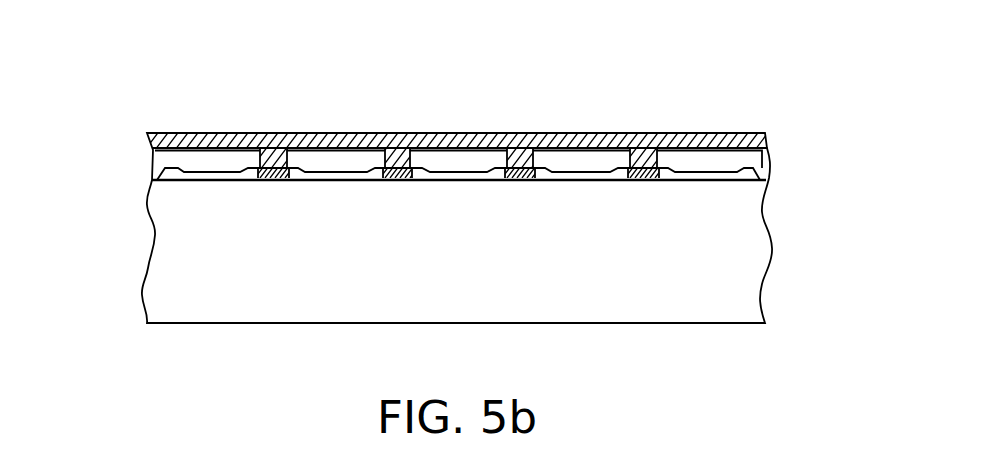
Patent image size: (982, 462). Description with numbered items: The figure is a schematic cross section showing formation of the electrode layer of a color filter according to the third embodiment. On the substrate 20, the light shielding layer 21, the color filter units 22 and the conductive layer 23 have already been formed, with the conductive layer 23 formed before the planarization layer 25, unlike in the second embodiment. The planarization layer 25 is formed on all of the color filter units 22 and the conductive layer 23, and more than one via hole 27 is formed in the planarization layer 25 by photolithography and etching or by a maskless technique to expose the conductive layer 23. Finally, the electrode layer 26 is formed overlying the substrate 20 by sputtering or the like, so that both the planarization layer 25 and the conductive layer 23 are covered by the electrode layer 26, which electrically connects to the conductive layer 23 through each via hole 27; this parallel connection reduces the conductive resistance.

The substrate 20 is at (312, 284).
The light shielding layer 21 is at (276, 168).
The color filter units 22 is at (223, 173).
The conductive layer 23 is at (642, 169).
The planarization layer 25 is at (158, 162).
The electrode layer 26 is at (762, 142).
The via hole 27 is at (404, 152).